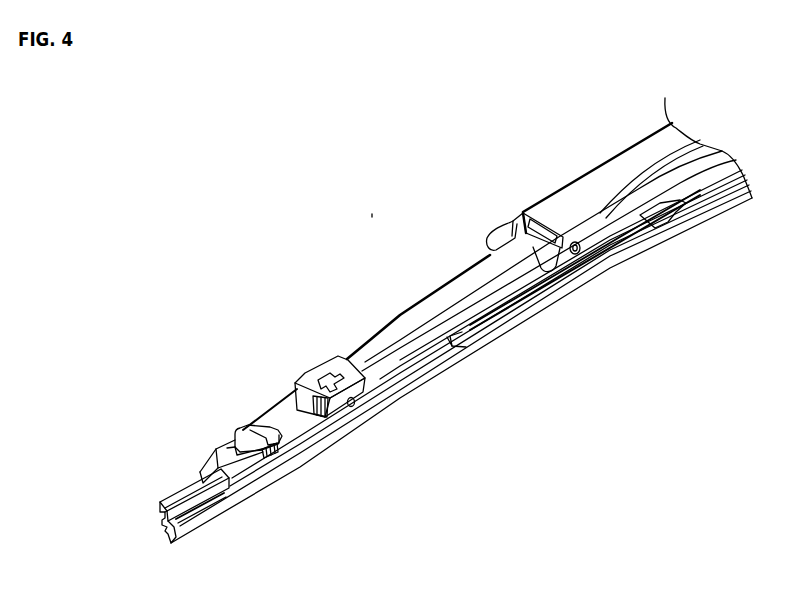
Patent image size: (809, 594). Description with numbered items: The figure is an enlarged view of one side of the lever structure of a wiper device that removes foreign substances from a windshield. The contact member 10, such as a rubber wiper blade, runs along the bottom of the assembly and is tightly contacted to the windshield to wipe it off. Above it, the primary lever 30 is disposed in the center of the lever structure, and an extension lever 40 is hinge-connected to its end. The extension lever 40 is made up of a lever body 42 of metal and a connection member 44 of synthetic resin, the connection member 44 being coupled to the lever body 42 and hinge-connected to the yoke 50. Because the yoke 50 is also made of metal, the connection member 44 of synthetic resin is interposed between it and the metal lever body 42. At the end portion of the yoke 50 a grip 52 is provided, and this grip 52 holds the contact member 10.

The contact member 10 is at (338, 438).
The primary lever 30 is at (609, 171).
The extension lever 40 is at (405, 230).
The lever body 42 is at (405, 321).
The connection member 44 is at (328, 357).
The yoke 50 is at (268, 415).
The grip 52 is at (233, 490).